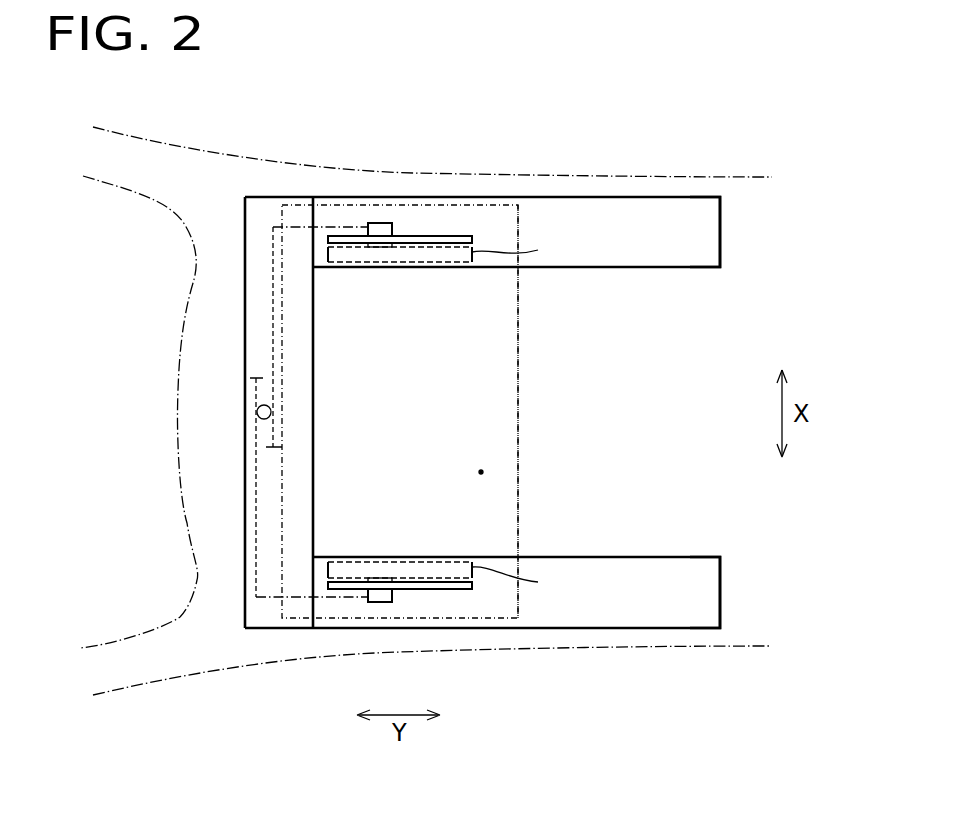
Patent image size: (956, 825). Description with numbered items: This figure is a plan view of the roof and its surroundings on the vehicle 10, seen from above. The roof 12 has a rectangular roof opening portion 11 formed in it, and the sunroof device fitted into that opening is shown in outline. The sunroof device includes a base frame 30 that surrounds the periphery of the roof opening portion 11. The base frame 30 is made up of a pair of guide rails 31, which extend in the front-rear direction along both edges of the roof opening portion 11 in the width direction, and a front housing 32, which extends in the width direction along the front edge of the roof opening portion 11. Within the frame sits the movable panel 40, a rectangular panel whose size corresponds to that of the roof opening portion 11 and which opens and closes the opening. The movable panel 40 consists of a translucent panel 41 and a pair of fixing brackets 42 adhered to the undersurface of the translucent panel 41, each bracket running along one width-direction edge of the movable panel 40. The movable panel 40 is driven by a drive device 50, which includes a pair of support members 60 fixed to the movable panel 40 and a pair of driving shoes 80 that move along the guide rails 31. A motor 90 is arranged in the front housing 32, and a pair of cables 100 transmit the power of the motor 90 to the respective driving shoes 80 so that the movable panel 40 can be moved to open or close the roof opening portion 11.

The vehicle 10 is at (708, 119).
The roof opening portion 11 is at (481, 472).
The roof 12 is at (510, 647).
The base frame 30 is at (686, 270).
The guide rails 31 is at (720, 228).
The front housing 32 is at (245, 283).
The movable panel 40 is at (519, 363).
The translucent panel 41 is at (518, 300).
The fixing brackets 42 is at (520, 417).
The drive device 50 is at (378, 221).
The support members 60 is at (445, 247).
The driving shoes 80 is at (386, 247).
The motor 90 is at (258, 414).
The cables 100 is at (273, 334).